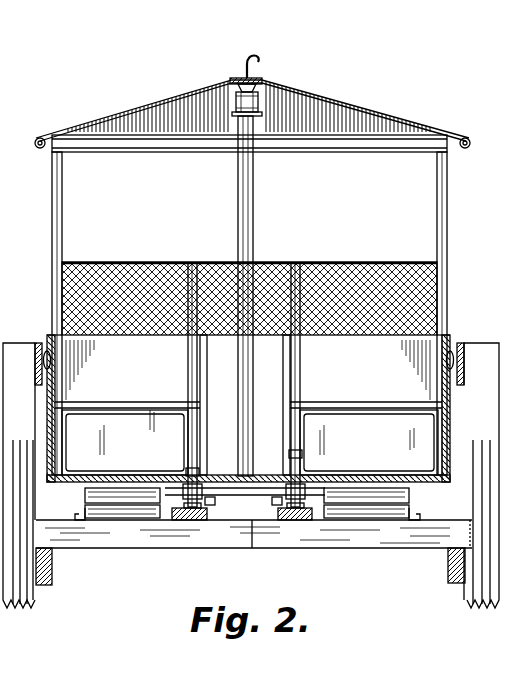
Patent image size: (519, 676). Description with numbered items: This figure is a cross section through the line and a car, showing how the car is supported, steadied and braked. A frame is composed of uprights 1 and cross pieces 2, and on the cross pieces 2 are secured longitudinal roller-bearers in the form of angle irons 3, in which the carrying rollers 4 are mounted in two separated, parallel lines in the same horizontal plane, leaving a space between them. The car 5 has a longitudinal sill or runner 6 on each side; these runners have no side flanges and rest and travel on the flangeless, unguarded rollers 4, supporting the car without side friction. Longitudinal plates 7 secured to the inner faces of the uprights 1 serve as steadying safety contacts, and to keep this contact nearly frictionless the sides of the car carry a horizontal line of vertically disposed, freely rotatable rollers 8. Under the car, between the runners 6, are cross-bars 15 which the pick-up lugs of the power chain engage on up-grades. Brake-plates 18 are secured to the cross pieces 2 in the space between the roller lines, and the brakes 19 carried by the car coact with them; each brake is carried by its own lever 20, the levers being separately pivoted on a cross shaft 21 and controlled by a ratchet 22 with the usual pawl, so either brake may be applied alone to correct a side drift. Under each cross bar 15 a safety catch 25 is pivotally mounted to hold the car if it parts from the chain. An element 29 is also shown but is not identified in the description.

The uprights 1 is at (251, 475).
The cross pieces 2 is at (138, 525).
The angle irons 3 is at (79, 515).
The carrying rollers 4 is at (125, 522).
The car 5 is at (252, 277).
The longitudinal sill or runner 6 is at (110, 500).
The longitudinal plates 7 is at (37, 345).
The freely rotatable rollers 8 is at (51, 362).
The cross-bars 15 is at (260, 490).
The brake-plates 18 is at (195, 521).
The brakes 19 is at (197, 504).
The lever 20 is at (189, 352).
The cross shaft 21 is at (254, 543).
The ratchet 22 is at (190, 470).
The safety catch 25 is at (213, 504).
The suspension hook 29 is at (255, 60).